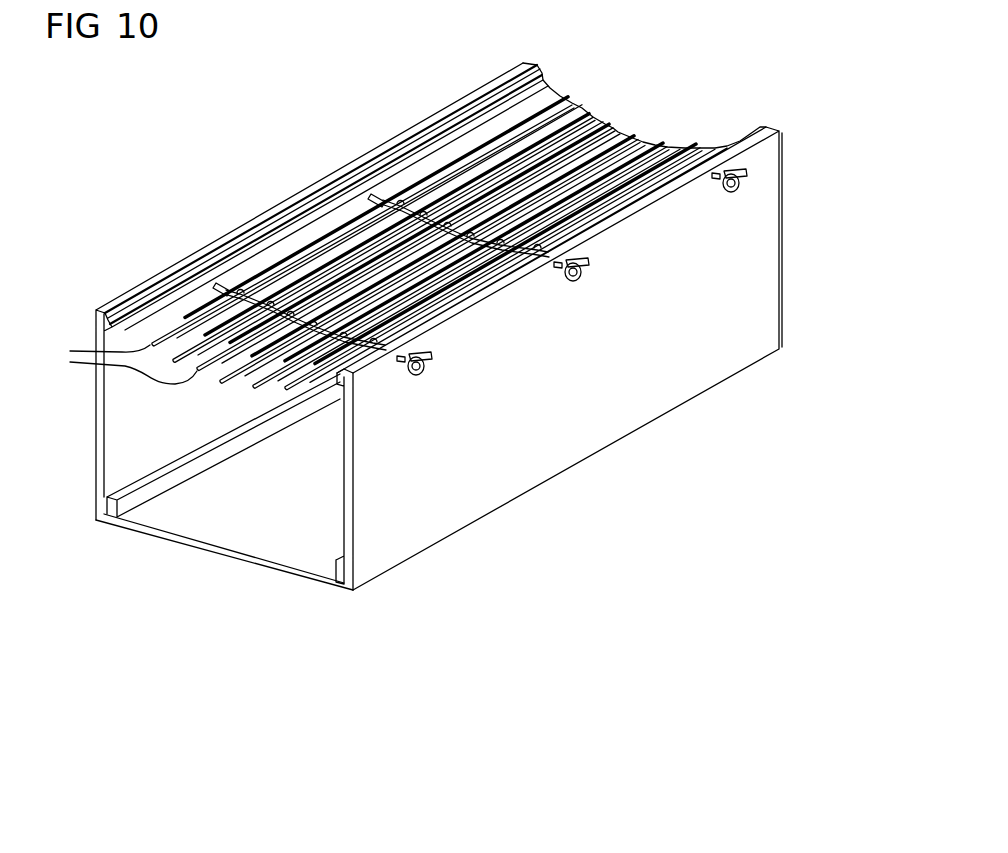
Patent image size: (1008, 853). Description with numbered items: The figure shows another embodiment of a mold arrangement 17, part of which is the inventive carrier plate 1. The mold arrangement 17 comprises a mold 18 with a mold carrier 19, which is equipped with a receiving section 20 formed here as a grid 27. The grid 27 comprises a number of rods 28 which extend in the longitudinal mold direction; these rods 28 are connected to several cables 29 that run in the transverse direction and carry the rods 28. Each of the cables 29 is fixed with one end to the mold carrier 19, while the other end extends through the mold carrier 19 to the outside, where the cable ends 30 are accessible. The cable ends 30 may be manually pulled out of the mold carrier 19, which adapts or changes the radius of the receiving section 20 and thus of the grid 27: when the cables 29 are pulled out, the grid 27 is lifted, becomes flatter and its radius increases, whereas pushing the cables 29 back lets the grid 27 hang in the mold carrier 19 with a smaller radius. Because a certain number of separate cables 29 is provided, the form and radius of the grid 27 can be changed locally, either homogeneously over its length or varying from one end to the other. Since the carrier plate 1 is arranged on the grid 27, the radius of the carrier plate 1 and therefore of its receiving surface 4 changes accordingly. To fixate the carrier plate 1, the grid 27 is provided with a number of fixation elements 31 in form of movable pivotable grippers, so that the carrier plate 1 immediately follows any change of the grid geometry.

The carrier plate 1 is at (492, 318).
The receiving surface 4 is at (575, 110).
The mold arrangement 17 is at (612, 358).
The mold 18 is at (682, 459).
The mold carrier 19 is at (452, 520).
The receiving section 20 is at (194, 519).
The grid 27 is at (238, 405).
The rods 28 is at (289, 471).
The cables 29 is at (413, 206).
The cable ends 30 is at (742, 192).
The fixation elements 31 is at (267, 300).